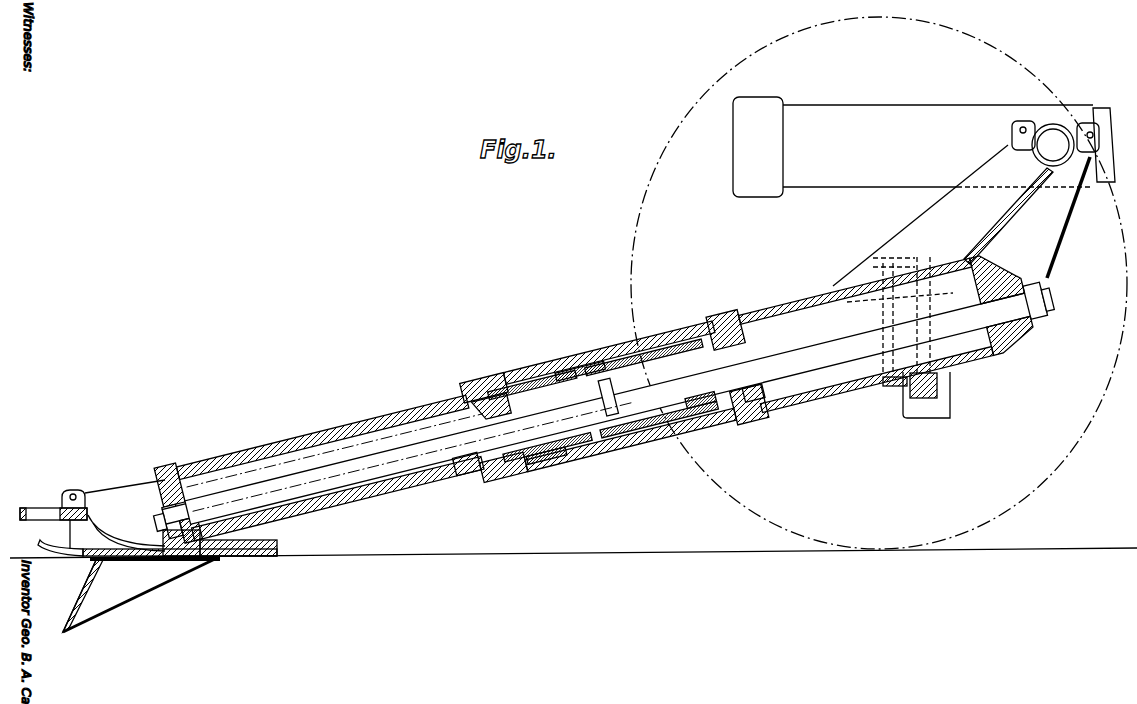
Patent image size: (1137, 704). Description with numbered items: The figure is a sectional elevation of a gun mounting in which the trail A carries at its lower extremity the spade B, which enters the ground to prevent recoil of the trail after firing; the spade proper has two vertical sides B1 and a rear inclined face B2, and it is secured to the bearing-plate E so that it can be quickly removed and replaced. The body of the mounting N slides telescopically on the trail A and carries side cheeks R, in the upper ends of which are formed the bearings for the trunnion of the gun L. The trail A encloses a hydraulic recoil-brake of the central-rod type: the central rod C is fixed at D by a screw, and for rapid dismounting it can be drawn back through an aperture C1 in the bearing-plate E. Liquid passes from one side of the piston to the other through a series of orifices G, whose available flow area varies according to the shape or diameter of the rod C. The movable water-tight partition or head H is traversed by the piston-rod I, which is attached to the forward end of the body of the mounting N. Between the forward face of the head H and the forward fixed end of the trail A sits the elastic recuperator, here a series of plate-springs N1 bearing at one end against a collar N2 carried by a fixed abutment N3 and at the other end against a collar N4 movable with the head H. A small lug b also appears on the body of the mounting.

The trail A is at (335, 466).
The spade B is at (157, 565).
The vertical sides B1 is at (141, 595).
The rear inclined face B2 is at (73, 595).
The central rod C is at (618, 399).
The aperture C1 is at (92, 515).
The fixing point of the central rod D is at (163, 480).
The bearing-plate E is at (212, 543).
The orifices G is at (481, 437).
The movable water-tight partition, piston, or head H is at (492, 407).
The piston-rod I is at (603, 400).
The gun L is at (924, 187).
The body of the mounting N is at (770, 359).
The plate-springs N1 is at (578, 370).
The collar N2 is at (697, 400).
The fixed abutment N3 is at (757, 392).
The collar N4 is at (540, 458).
The side cheeks R is at (920, 215).
The lug b is at (916, 395).